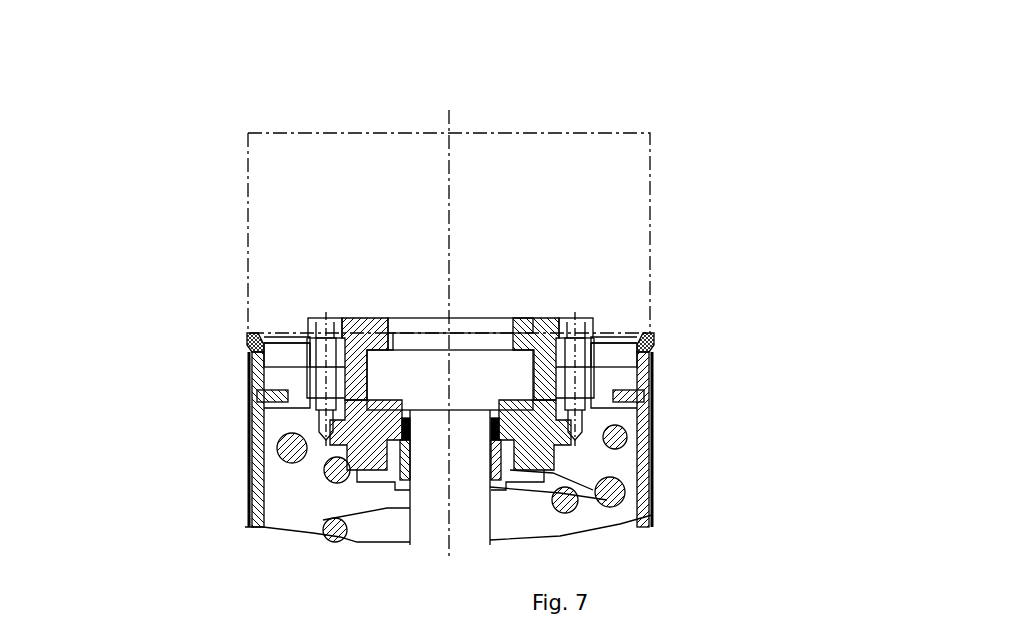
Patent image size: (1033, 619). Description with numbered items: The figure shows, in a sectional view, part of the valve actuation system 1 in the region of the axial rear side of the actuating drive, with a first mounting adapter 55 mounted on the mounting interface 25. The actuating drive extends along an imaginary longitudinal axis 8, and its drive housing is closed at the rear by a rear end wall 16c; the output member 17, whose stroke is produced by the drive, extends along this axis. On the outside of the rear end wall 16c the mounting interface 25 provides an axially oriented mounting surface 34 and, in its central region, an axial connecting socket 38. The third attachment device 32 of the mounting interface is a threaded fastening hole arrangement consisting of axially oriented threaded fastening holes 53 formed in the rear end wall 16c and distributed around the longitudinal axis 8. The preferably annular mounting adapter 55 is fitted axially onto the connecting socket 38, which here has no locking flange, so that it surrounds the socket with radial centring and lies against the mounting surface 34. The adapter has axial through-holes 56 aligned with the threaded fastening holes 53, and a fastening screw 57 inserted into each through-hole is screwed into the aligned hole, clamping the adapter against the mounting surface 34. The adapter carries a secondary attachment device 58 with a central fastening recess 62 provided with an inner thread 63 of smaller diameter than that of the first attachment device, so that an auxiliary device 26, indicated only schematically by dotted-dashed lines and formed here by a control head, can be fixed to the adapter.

The valve actuation system 1 is at (641, 110).
The longitudinal axis 8 is at (455, 184).
The rear end wall 16c is at (646, 412).
The output member 17 is at (432, 522).
The mounting interface 25 is at (271, 325).
The auxiliary device 26 is at (628, 193).
The attachment device 32 is at (300, 411).
The mounting surface 34 is at (254, 328).
The axial connecting socket 38 is at (550, 366).
The threaded fastening holes 53 is at (320, 443).
The mounting adapter 55 is at (363, 340).
The through-holes 56 is at (320, 378).
The fastening screw 57 is at (317, 350).
The secondary attachment device 58 is at (395, 345).
The central fastening recess 62 is at (500, 323).
The inner thread 63 is at (393, 340).